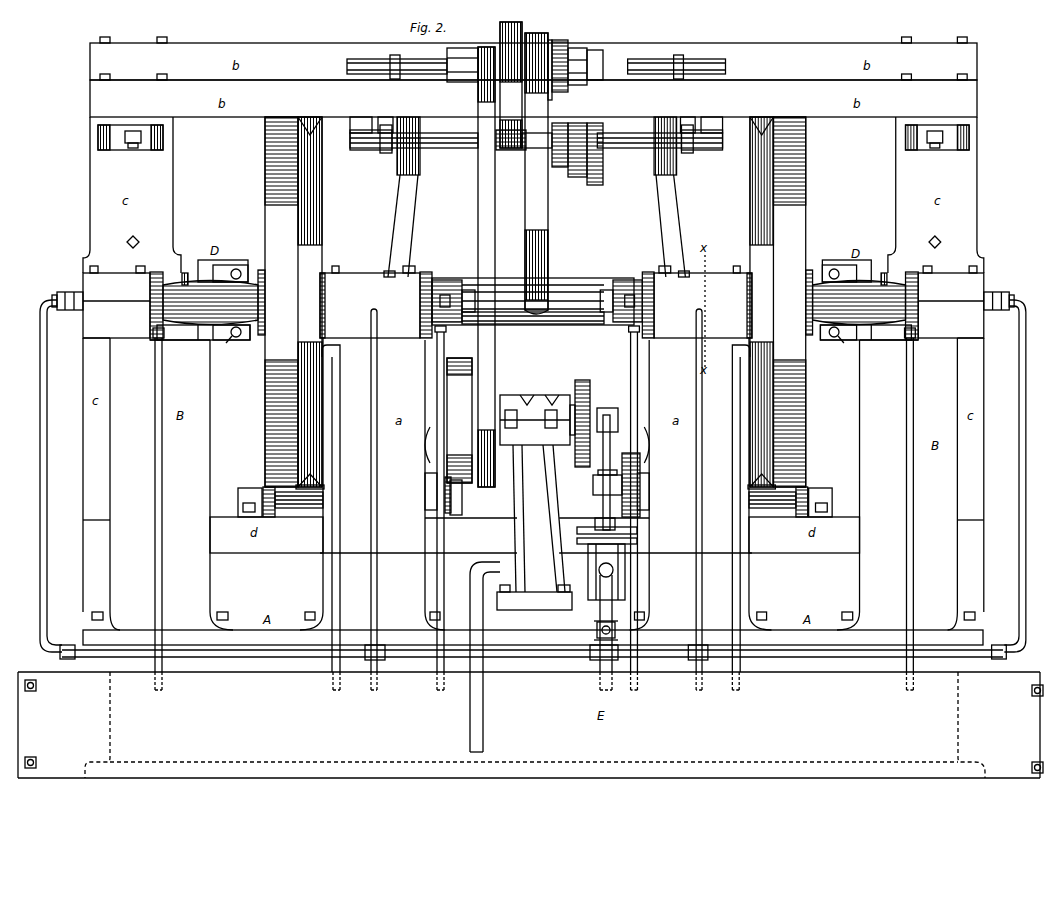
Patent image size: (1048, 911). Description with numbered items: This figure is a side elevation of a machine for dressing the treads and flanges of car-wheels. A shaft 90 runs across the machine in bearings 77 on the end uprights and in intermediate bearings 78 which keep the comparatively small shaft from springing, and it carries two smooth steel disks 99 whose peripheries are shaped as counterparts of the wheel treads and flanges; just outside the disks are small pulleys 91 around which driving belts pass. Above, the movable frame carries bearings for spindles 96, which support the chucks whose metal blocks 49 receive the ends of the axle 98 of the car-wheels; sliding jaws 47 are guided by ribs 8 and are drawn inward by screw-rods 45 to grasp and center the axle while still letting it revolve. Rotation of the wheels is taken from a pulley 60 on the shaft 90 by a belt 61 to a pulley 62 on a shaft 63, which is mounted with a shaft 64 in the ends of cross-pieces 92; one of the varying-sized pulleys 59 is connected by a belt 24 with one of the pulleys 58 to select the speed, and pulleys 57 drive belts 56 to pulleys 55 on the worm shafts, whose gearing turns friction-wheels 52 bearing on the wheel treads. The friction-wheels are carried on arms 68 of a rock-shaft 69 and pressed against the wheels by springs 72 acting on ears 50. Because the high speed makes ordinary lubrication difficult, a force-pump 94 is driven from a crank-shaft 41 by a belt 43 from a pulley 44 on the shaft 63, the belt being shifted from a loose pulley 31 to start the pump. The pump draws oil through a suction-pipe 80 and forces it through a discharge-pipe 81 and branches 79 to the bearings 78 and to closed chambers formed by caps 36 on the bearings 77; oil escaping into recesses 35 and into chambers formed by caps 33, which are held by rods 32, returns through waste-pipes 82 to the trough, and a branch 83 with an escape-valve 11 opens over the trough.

The ribs 8 is at (237, 269).
The escape-valve 11 is at (597, 626).
The belt 24 is at (512, 118).
The loose pulley 31 is at (459, 420).
The rods 32 is at (590, 326).
The caps 33 is at (436, 290).
The recesses 35 is at (150, 310).
The caps 36 is at (68, 292).
The crank-shaft 41 is at (576, 410).
The belt 43 is at (478, 218).
The pulley 44 is at (462, 65).
The screw-rods 45 is at (238, 338).
The sliding jaws 47 is at (222, 340).
The metal blocks 49 is at (226, 262).
The ears 50 is at (622, 462).
The friction-wheels 52 is at (536, 487).
The pulleys 55 is at (425, 446).
The belts 56 is at (392, 230).
The pulleys 57 is at (397, 170).
The pulleys 58 is at (604, 166).
The pulleys 59 is at (510, 22).
The pulley 60 is at (525, 295).
The belt 61 is at (536, 171).
The pulley 62 is at (551, 42).
The shaft 63 is at (412, 60).
The shaft 64 is at (462, 148).
The arms 68 is at (266, 492).
The rock-shaft 69 is at (535, 502).
The springs 72 is at (462, 508).
The bearings 77 is at (533, 302).
The bearings 78 is at (536, 302).
The branches 79 is at (40, 585).
The suction-pipe 80 is at (483, 668).
The discharge-pipe 81 is at (598, 578).
The waste-pipes 82 is at (162, 596).
The branch 83 is at (600, 665).
The shaft 90 is at (585, 300).
The pulleys 91 is at (534, 302).
The cross-pieces 92 is at (360, 65).
The force-pump 94 is at (607, 563).
The spindles 96 is at (186, 272).
The axle 98 is at (546, 326).
The disks 99 is at (535, 302).